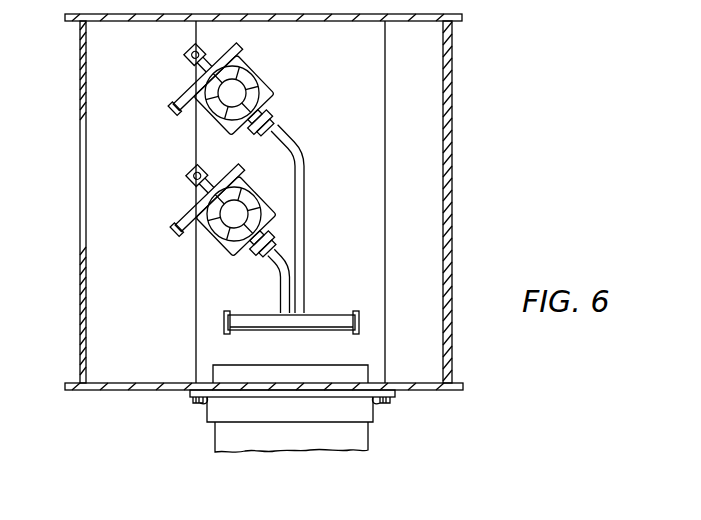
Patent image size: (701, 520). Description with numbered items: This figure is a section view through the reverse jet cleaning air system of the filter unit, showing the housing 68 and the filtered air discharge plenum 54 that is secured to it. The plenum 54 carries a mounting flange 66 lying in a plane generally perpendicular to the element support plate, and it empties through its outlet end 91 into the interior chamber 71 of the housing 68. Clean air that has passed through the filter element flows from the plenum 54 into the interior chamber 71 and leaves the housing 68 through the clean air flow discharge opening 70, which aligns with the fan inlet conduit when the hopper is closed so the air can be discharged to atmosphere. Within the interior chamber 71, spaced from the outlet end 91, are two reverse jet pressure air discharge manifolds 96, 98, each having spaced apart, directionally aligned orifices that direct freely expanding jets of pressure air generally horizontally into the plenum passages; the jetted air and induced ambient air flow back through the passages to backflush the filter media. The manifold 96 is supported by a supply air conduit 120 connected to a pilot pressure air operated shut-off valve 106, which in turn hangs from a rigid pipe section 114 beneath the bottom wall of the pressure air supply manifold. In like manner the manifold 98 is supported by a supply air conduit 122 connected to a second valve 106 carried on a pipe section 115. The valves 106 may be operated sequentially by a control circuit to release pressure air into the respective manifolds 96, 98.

The filtered air discharge plenum 54 is at (372, 440).
The mounting flange 66 is at (380, 404).
The housing 68 is at (453, 118).
The clean air flow discharge opening 70 is at (80, 134).
The interior chamber 71 is at (352, 181).
The outlet end 91 is at (230, 364).
The reverse jet pressure air discharge manifold 96 is at (326, 314).
The reverse jet pressure air discharge manifold 98 is at (291, 319).
The pilot pressure air operated shut-off valve 106 is at (228, 156).
The pipe section 114 is at (270, 84).
The pipe section 115 is at (196, 262).
The supply air conduit 120 is at (305, 222).
The supply air conduit 122 is at (272, 280).